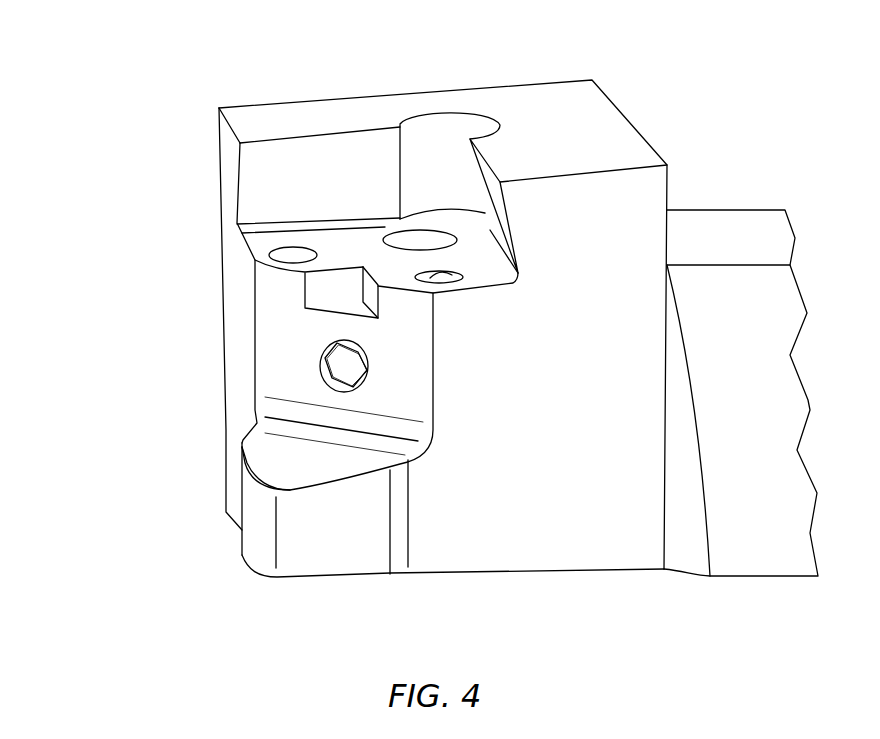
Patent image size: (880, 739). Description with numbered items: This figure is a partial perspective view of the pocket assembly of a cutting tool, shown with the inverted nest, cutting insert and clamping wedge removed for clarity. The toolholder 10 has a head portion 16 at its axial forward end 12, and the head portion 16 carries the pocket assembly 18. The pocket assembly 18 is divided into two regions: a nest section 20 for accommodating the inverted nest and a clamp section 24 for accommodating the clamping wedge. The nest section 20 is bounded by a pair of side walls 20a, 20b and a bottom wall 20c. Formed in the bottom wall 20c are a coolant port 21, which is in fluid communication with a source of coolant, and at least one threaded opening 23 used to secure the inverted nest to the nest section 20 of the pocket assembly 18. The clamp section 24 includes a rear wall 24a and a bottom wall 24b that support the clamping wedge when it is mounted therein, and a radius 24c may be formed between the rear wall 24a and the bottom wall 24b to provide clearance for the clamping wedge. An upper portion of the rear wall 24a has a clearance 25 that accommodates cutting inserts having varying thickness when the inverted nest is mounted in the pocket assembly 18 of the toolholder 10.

The toolholder 10 is at (88, 72).
The axial forward end 12 is at (162, 255).
The head portion 16 is at (330, 113).
The pocket assembly 18 is at (215, 222).
The nest section 20 is at (260, 193).
The side wall 20a is at (260, 160).
The side wall 20b is at (496, 210).
The bottom wall 20c is at (343, 247).
The coolant port 21 is at (435, 230).
The threaded opening 23 is at (292, 247).
The clamp section 24 is at (255, 340).
The rear wall 24a is at (272, 372).
The bottom wall 24b is at (277, 473).
The radius 24c is at (363, 425).
The clearance 25 is at (313, 295).